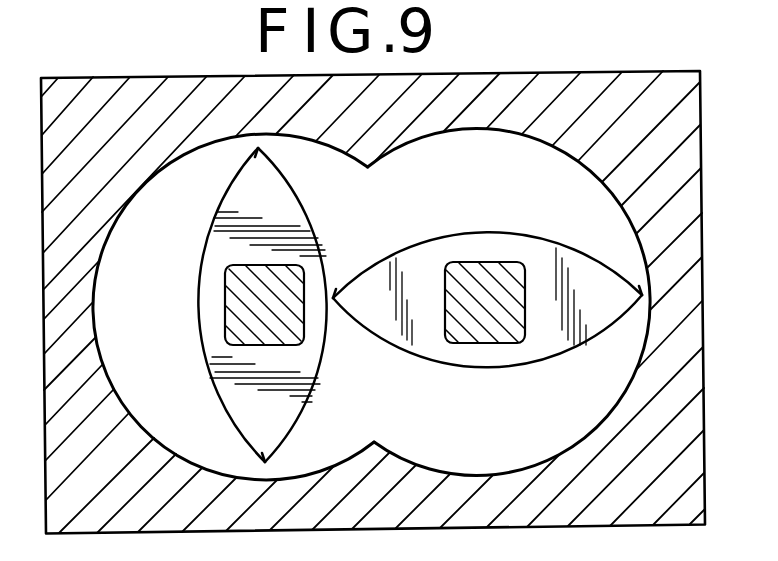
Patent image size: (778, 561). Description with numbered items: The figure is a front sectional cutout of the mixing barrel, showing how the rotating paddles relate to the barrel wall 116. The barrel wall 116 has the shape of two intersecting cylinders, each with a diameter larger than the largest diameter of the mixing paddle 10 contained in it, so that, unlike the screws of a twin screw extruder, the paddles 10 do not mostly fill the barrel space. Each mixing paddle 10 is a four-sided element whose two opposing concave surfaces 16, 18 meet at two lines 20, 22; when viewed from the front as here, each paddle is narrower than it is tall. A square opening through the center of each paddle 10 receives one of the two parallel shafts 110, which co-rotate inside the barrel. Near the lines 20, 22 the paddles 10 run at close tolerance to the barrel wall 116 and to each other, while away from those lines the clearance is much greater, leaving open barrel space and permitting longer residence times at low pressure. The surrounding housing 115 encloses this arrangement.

The mixing paddle 10 is at (389, 305).
The concave surface 16 is at (200, 330).
The concave surface 18 is at (327, 337).
The line of intersection 20 is at (266, 147).
The line of intersection 22 is at (334, 297).
The shaft 110 is at (235, 288).
The housing 115 is at (553, 77).
The barrel wall 116 is at (124, 210).